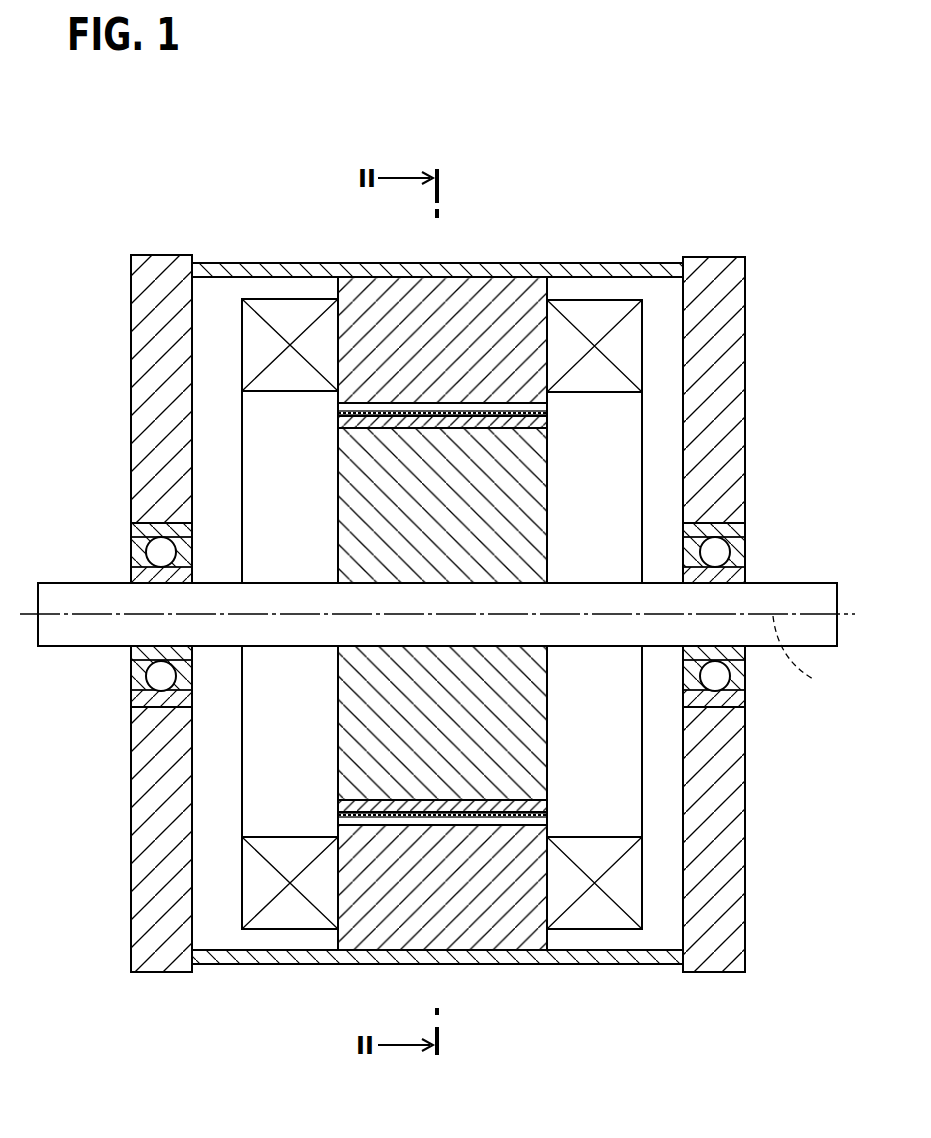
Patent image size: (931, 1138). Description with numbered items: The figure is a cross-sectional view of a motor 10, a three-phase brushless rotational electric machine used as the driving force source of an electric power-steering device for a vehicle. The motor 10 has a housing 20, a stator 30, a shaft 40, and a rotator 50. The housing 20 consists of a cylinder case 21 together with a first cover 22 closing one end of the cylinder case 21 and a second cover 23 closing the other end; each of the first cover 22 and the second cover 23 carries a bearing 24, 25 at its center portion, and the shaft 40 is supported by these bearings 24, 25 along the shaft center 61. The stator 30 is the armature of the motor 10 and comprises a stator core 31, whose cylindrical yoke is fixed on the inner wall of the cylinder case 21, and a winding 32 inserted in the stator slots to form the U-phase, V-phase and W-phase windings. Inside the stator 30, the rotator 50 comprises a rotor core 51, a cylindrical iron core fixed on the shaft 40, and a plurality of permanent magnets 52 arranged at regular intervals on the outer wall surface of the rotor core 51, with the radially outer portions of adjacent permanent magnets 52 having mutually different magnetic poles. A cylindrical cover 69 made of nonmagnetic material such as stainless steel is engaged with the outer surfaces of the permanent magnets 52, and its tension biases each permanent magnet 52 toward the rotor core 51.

The motor 10 is at (144, 223).
The housing 20 is at (317, 248).
The cylinder case 21 is at (252, 270).
The first cover 22 is at (148, 328).
The second cover 23 is at (732, 337).
The bearing 24 is at (157, 553).
The bearing 25 is at (717, 554).
The stator 30 is at (480, 263).
The stator core 31 is at (523, 285).
The winding 32 is at (607, 312).
The shaft 40 is at (97, 632).
The rotator 50 is at (562, 484).
The rotor core 51 is at (352, 497).
The permanent magnet 52 is at (338, 422).
The shaft center 61 is at (808, 655).
The cylindrical cover 69 is at (338, 413).